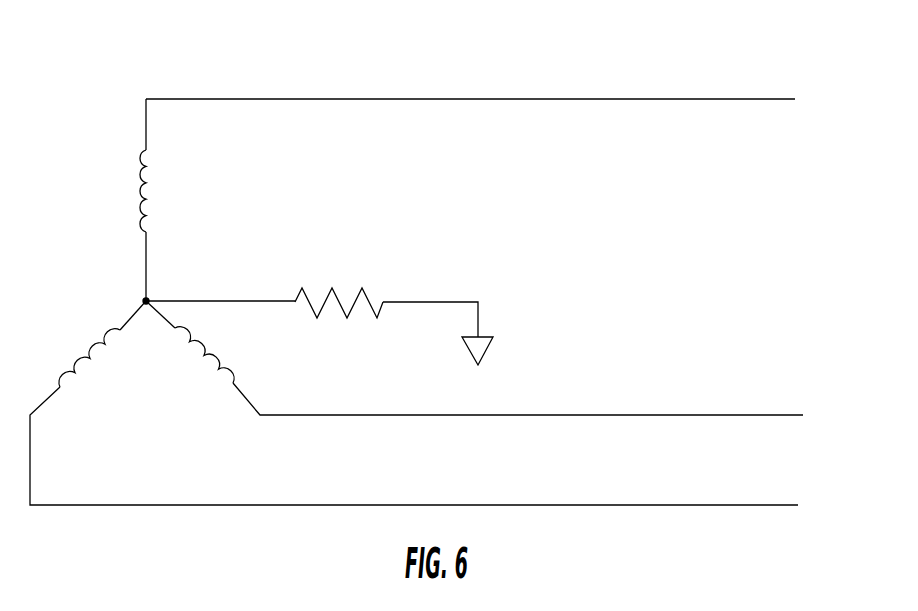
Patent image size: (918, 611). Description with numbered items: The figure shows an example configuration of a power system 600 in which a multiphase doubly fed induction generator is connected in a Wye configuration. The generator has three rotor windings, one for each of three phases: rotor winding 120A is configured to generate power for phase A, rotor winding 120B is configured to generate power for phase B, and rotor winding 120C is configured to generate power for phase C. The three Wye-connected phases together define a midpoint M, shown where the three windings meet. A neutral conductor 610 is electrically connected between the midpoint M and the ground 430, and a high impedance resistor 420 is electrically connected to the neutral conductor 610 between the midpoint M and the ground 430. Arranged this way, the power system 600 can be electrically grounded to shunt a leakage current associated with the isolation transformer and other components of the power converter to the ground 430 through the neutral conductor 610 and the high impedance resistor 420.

The power system 600 is at (698, 62).
The rotor winding 120A is at (138, 190).
The rotor winding 120B is at (213, 353).
The rotor winding 120C is at (82, 355).
The neutral conductor 610 is at (232, 300).
The high impedance resistor 420 is at (365, 293).
The ground 430 is at (492, 348).